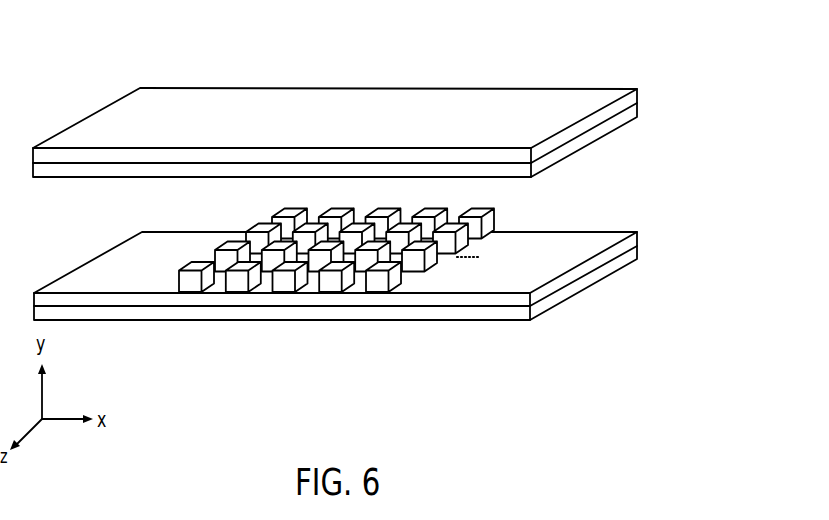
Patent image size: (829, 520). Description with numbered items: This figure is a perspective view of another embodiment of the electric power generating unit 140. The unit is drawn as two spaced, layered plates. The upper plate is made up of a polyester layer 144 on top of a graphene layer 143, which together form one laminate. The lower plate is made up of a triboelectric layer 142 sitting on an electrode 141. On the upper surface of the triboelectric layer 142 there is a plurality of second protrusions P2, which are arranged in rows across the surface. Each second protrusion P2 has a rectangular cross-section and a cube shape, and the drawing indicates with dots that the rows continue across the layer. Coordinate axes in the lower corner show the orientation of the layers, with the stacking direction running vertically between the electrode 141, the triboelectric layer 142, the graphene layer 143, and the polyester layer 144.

The electric power generating unit 140 is at (470, 76).
The polyester layer 144 is at (638, 95).
The graphene layer 143 is at (627, 117).
The triboelectric layer 142 is at (631, 245).
The electrode 141 is at (625, 258).
The second protrusion P2 is at (494, 221).